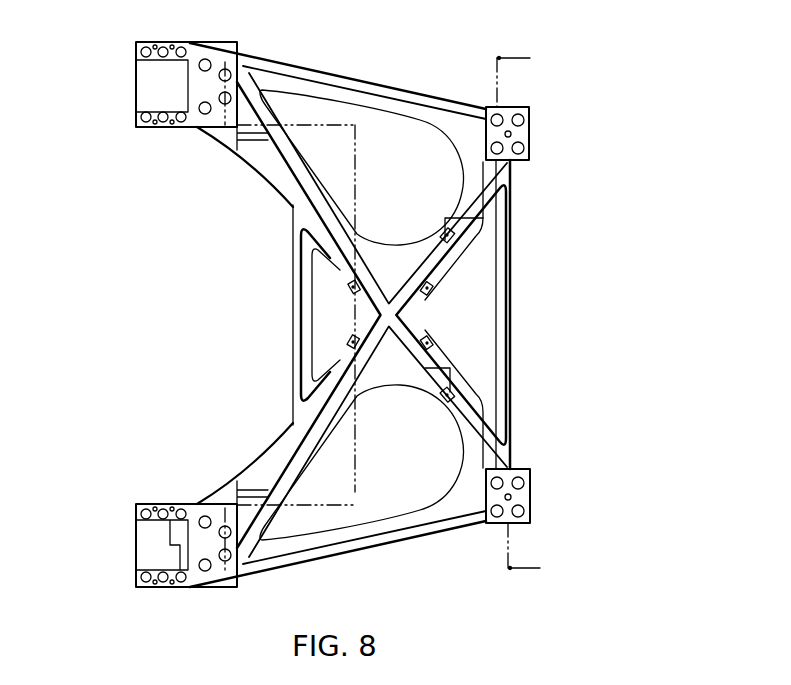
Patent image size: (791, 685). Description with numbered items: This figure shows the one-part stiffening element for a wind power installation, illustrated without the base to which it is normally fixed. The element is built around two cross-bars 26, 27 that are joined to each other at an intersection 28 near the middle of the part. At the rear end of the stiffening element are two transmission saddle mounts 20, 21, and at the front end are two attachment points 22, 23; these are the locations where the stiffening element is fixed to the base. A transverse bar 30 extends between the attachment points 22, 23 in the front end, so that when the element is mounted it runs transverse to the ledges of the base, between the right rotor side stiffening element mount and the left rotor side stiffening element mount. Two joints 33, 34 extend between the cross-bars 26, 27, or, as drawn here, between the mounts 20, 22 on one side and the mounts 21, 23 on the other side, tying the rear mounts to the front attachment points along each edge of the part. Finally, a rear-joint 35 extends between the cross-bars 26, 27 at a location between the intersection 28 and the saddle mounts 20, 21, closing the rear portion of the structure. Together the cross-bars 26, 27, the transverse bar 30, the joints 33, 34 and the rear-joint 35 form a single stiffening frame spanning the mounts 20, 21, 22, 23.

The transmission saddle mount 20 is at (155, 80).
The transmission saddle mount 21 is at (163, 546).
The attachment point 22 is at (522, 130).
The attachment point 23 is at (520, 492).
The cross-bar 26 is at (457, 403).
The cross-bar 27 is at (447, 236).
The intersection 28 is at (383, 312).
The transverse bar 30 is at (512, 298).
The joint 33 is at (381, 82).
The joint 34 is at (380, 548).
The rear-joint 35 is at (300, 245).